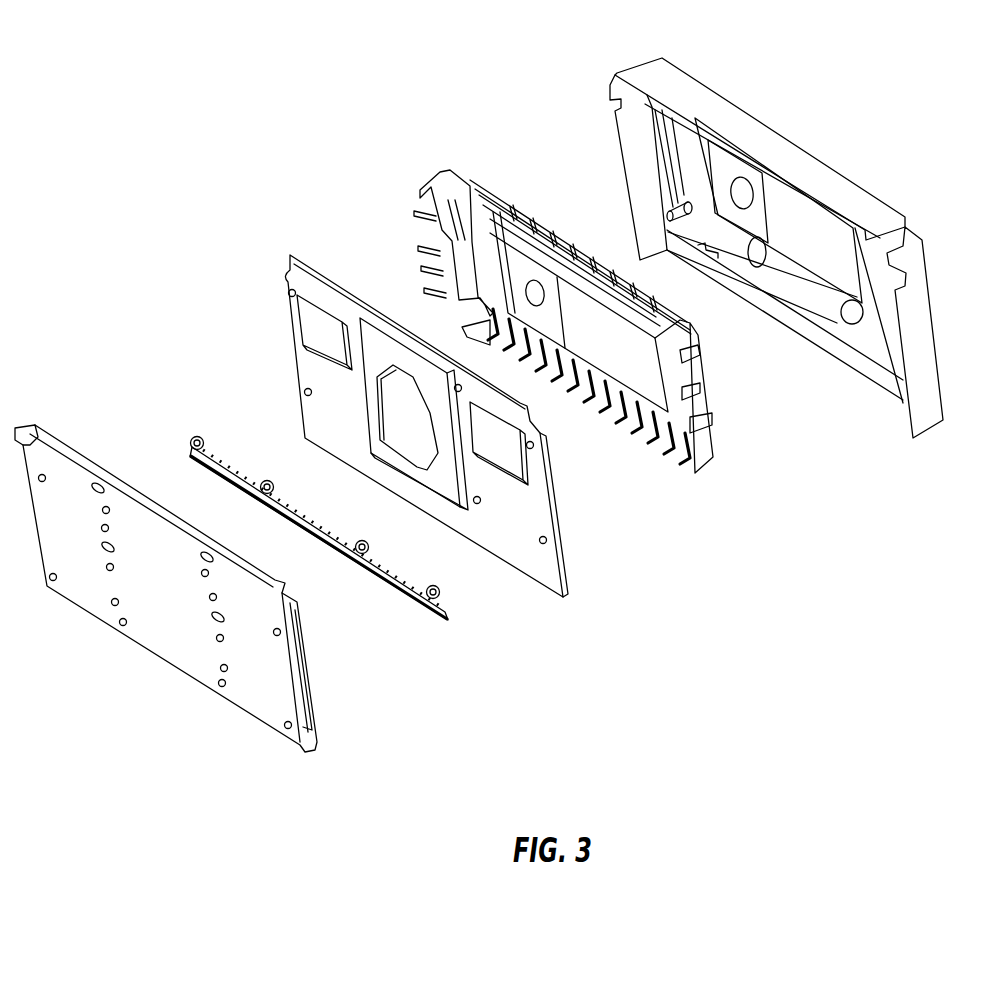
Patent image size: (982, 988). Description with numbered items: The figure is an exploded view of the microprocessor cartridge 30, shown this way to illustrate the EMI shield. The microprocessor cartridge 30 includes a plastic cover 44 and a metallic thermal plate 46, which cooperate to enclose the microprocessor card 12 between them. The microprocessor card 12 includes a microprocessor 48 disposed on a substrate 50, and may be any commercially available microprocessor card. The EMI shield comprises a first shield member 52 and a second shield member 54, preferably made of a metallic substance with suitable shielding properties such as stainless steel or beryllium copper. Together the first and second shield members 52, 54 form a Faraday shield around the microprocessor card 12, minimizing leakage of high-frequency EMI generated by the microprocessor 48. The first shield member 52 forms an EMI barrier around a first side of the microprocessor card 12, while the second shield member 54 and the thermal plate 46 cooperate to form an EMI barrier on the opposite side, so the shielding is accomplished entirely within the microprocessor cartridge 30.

The microprocessor cartridge 30 is at (255, 62).
The microprocessor card 12 is at (282, 381).
The plastic cover 44 is at (708, 107).
The first shield member 52 is at (707, 433).
The substrate 50 is at (535, 565).
The microprocessor 48 is at (417, 440).
The second shield member 54 is at (412, 600).
The thermal plate 46 is at (252, 695).